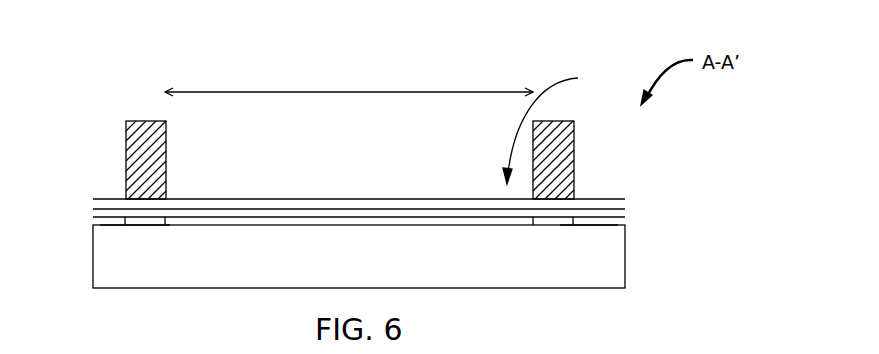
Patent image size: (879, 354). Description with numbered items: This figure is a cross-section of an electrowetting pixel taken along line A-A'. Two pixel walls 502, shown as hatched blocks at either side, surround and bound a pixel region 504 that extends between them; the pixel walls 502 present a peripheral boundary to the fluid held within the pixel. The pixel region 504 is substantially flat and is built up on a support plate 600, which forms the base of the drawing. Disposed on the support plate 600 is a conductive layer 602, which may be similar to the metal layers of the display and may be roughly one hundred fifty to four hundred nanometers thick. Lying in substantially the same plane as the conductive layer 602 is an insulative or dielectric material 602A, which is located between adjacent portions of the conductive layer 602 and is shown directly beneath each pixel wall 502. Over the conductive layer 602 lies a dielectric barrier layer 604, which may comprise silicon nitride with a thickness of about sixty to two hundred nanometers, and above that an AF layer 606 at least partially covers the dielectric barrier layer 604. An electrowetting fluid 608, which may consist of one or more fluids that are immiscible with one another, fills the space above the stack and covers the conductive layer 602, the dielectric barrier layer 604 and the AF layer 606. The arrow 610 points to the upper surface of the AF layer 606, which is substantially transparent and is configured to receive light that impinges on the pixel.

The pixel walls 502 is at (125, 174).
The pixel region 504 is at (349, 82).
The support plate 600 is at (304, 266).
The conductive layer 602 is at (110, 227).
The insulative or dielectric material 602A is at (153, 226).
The dielectric barrier layer 604 is at (315, 207).
The AF layer 606 is at (367, 200).
The electrowetting fluid 608 is at (296, 182).
The arrow 610 is at (560, 125).